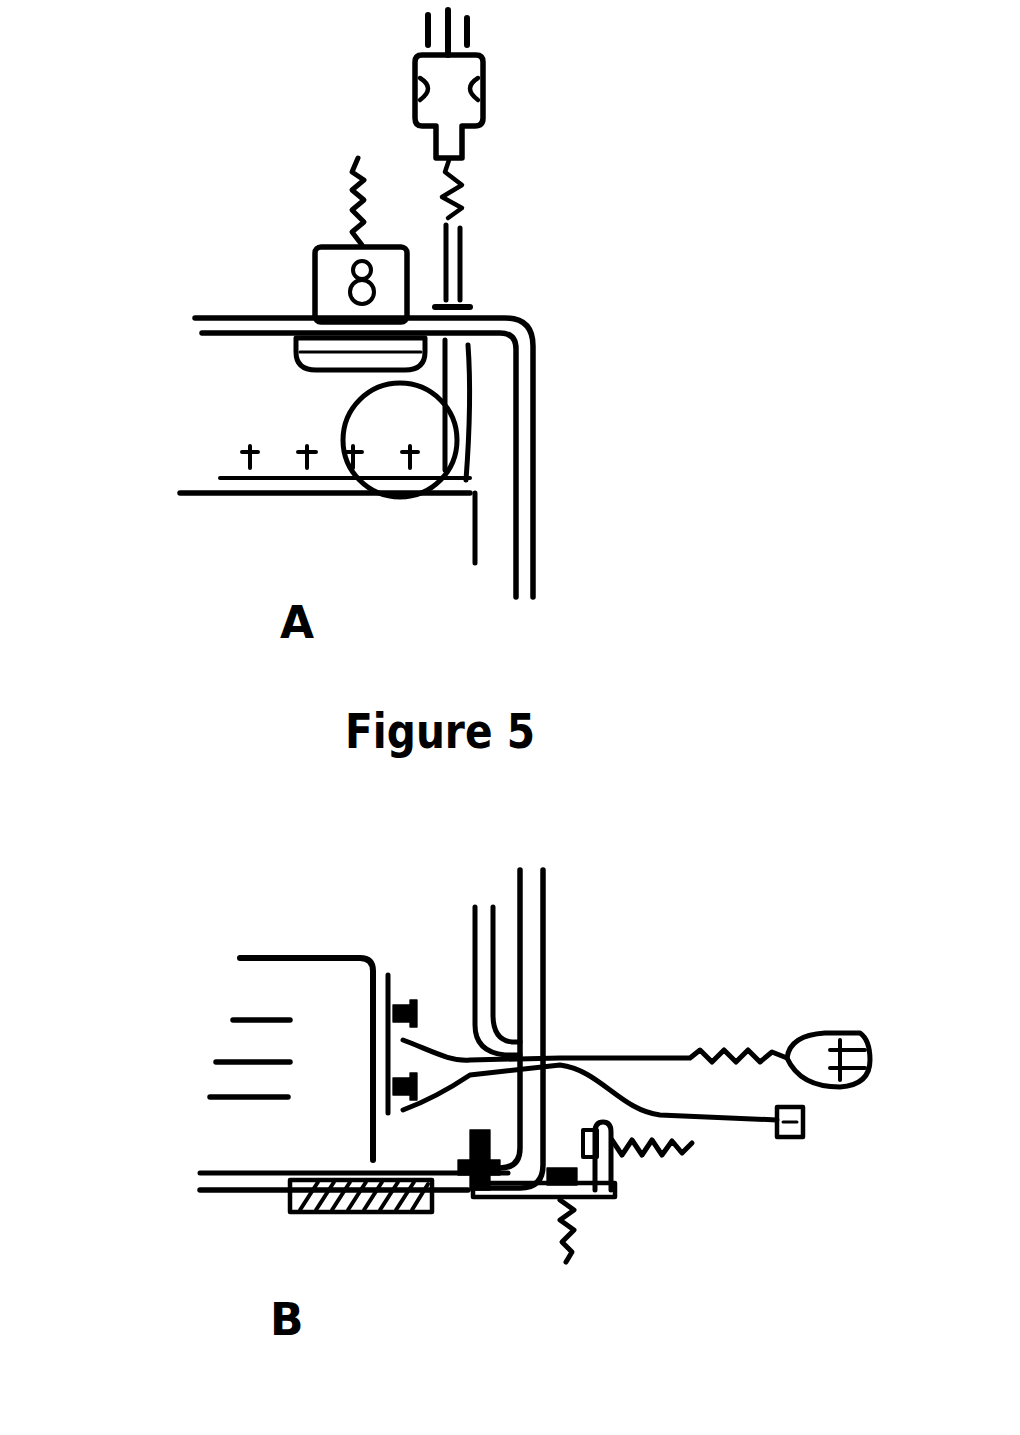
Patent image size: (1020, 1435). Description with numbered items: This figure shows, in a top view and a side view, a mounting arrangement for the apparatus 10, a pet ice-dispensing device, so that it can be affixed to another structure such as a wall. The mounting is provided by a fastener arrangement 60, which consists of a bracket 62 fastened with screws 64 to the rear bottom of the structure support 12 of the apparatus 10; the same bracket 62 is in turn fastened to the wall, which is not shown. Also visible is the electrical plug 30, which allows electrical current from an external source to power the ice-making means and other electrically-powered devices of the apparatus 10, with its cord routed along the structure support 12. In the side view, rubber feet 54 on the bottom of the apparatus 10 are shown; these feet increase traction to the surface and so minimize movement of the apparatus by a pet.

The apparatus 10 is at (188, 946).
The structure support 12 is at (527, 387).
The electrical plug 30 is at (468, 78).
The rubber feet 54 is at (365, 1205).
The fastener arrangement 60 is at (283, 239).
The bracket 62 is at (332, 292).
The screws 64 is at (350, 220).